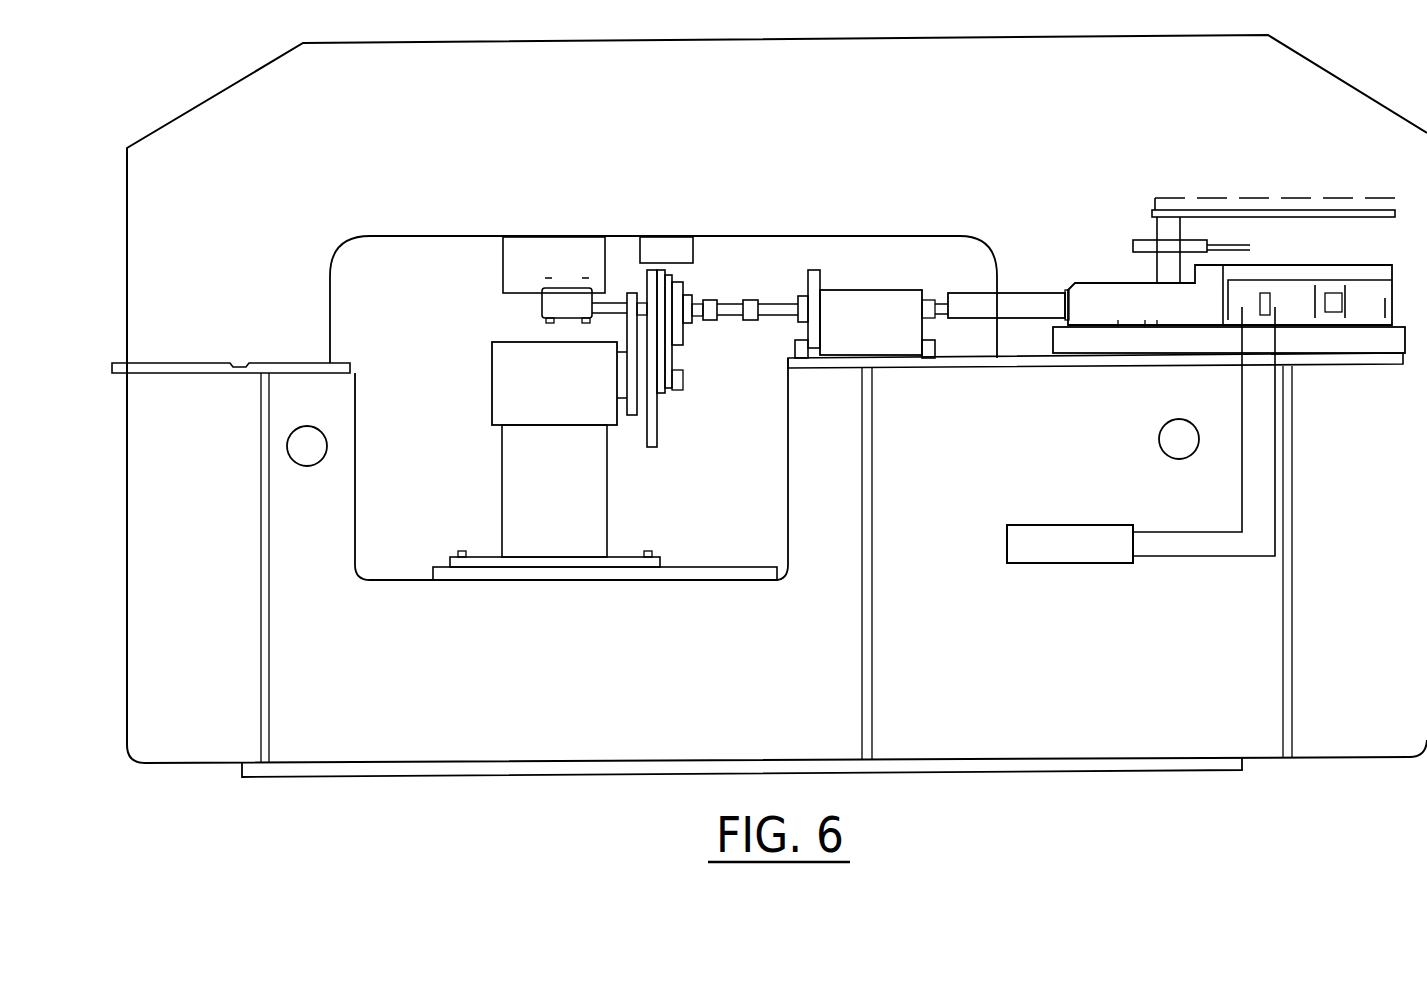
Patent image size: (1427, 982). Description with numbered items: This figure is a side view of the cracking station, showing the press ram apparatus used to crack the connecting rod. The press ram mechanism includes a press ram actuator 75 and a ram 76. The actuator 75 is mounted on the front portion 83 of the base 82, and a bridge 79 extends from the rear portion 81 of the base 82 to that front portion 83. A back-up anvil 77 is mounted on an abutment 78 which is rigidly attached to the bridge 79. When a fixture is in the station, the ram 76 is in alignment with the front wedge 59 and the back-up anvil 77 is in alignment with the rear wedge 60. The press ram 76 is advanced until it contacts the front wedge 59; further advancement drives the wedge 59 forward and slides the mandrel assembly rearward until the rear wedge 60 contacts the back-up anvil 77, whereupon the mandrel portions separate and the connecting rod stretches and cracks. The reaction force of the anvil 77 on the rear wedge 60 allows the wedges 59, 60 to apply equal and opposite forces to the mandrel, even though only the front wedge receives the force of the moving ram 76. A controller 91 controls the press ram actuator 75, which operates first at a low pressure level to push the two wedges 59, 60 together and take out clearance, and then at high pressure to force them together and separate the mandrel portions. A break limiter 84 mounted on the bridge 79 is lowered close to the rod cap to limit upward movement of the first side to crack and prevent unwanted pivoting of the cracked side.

The front wedge 59 is at (700, 297).
The rear wedge 60 is at (649, 292).
The press ram actuator 75 is at (1110, 262).
The ram 76 is at (731, 300).
The back-up anvil 77 is at (611, 316).
The abutment 78 is at (541, 248).
The bridge 79 is at (422, 228).
The rear portion 81 is at (343, 406).
The base 82 is at (600, 652).
The front portion 83 is at (1108, 419).
The break limiter 84 is at (661, 243).
The controller 91 is at (1116, 565).